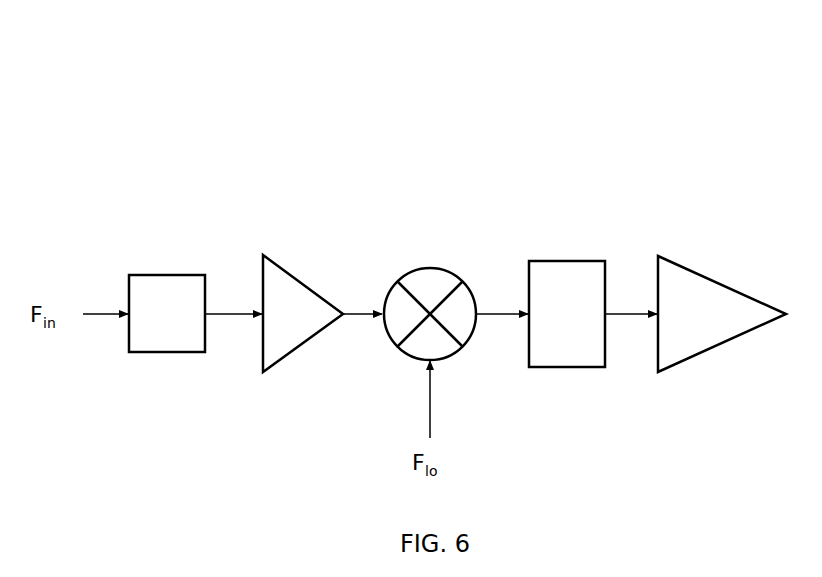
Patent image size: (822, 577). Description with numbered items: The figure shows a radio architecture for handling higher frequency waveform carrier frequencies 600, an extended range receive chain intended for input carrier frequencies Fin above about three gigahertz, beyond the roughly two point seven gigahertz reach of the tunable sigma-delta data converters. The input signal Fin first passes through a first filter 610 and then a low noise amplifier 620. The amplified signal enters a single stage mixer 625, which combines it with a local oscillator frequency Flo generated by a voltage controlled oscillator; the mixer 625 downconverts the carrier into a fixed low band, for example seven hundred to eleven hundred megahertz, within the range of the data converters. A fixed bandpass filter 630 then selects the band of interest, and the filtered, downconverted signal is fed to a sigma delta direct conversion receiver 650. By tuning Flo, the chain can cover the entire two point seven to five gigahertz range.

The radio architecture for handling higher frequency waveform carrier frequencies 600 is at (450, 52).
The first filter 610 is at (167, 313).
The low noise amplifier 620 is at (303, 313).
The mixer 625 is at (435, 264).
The fixed bandpass filter 630 is at (567, 314).
The sigma delta direct conversion receiver 650 is at (722, 314).